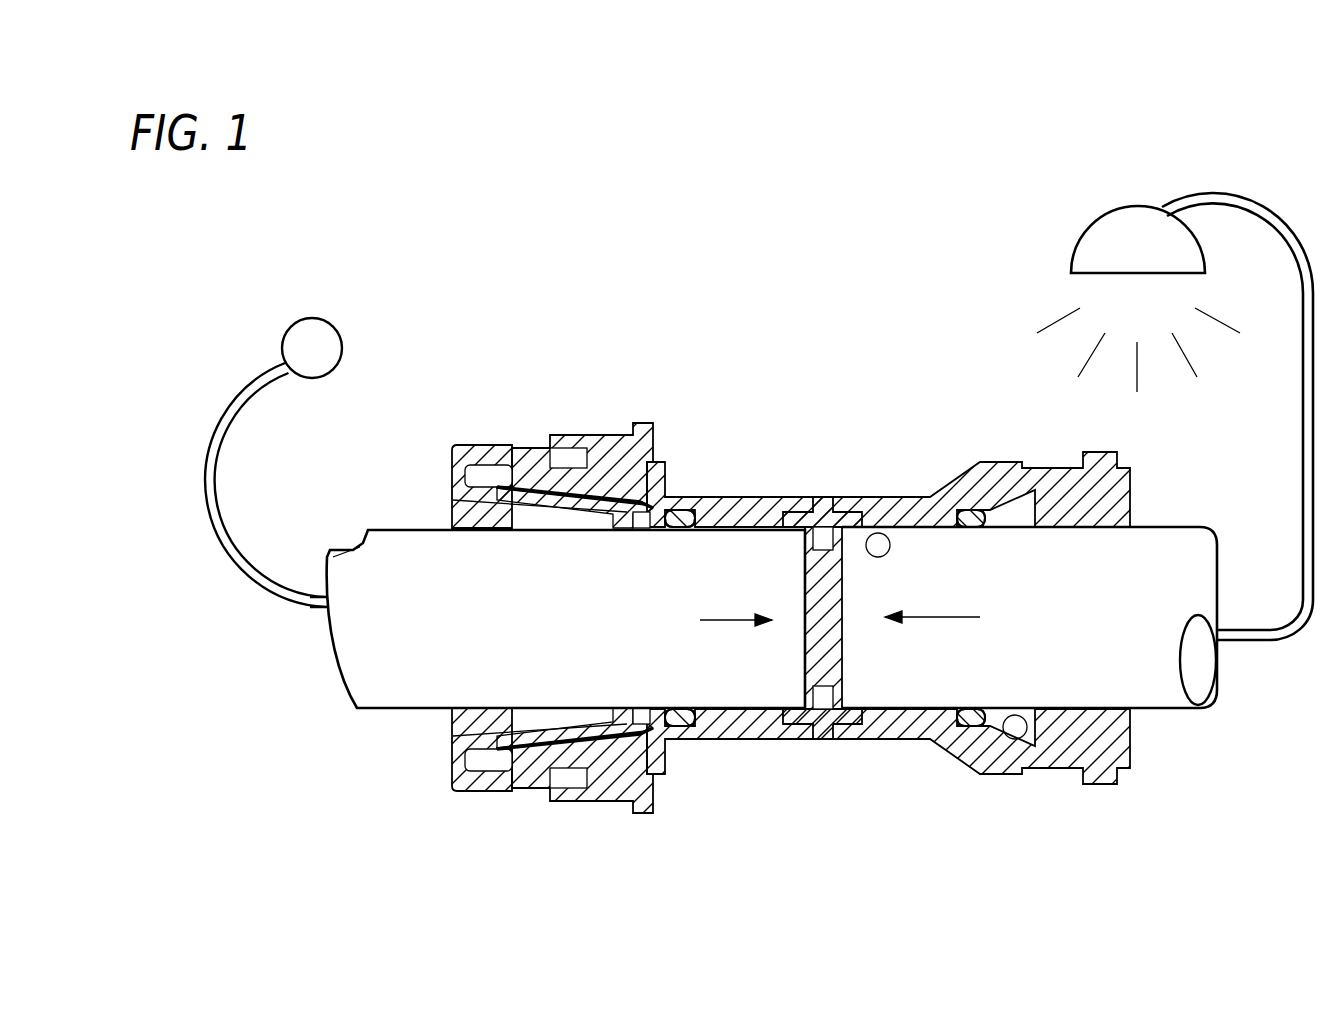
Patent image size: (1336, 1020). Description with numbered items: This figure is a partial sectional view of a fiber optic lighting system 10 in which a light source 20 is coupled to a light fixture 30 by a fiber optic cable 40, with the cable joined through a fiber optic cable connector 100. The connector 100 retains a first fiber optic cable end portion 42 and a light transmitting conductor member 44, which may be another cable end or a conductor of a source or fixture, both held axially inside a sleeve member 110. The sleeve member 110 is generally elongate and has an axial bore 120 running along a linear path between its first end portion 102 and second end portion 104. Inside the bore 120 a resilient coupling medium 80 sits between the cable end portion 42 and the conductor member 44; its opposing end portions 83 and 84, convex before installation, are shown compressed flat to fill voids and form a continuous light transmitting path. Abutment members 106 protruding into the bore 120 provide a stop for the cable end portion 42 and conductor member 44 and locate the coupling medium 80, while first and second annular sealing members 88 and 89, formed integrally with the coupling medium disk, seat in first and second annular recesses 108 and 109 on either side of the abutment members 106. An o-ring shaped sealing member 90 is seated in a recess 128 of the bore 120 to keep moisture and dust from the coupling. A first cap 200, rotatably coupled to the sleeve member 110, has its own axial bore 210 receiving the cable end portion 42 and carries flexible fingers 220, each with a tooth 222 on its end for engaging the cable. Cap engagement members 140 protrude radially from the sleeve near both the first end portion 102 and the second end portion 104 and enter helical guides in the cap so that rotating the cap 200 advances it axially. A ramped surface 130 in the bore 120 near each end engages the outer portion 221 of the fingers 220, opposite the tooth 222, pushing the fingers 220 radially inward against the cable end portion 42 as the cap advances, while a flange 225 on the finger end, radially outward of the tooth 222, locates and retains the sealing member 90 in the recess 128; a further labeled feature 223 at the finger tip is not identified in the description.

The fiber optic lighting system 10 is at (470, 284).
The light source 20 is at (285, 342).
The light fixture 30 is at (1105, 215).
The fiber optic cable 40 is at (208, 520).
The first fiber optic cable end portion 42 is at (566, 619).
The light transmitting conductor member 44 is at (1029, 617).
The coupling medium 80 is at (852, 603).
The end portion 83 is at (803, 628).
The end portion 84 is at (845, 640).
The first annular sealing member 88 is at (797, 508).
The second annular sealing member 89 is at (838, 505).
The sealing member 90 is at (962, 510).
The fiber optic cable connector 100 is at (800, 392).
The first end portion 102 is at (562, 772).
The second end portion 104 is at (1062, 790).
The abutment member 106 is at (822, 505).
The first annular recess 108 is at (808, 740).
The second annular recess 109 is at (846, 740).
The sleeve member 110 is at (915, 748).
The axial bore 120 is at (866, 515).
The recess 128 is at (683, 532).
The ramped surface 130 is at (676, 522).
The cap engagement member 140 is at (530, 442).
The first cap 200 is at (597, 436).
The axial bore 210 is at (468, 740).
The fingers 220 is at (478, 520).
The outer portion 221 is at (644, 430).
The tooth 222 is at (630, 520).
The ferrule tip 223 is at (638, 530).
The flange 225 is at (685, 448).